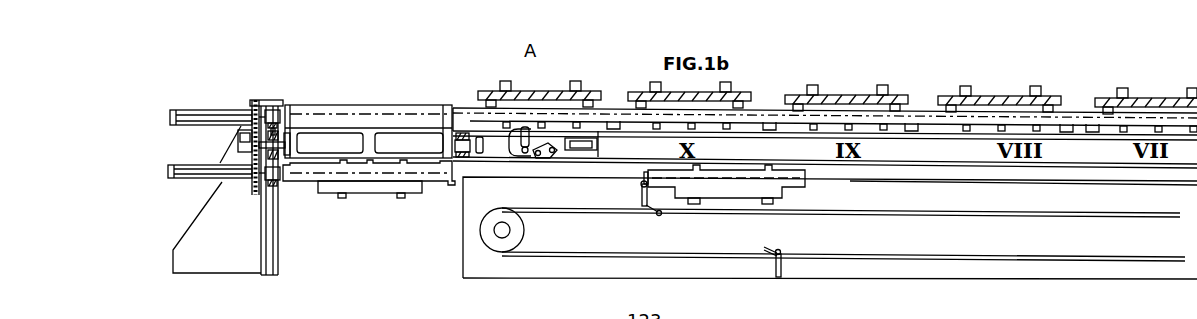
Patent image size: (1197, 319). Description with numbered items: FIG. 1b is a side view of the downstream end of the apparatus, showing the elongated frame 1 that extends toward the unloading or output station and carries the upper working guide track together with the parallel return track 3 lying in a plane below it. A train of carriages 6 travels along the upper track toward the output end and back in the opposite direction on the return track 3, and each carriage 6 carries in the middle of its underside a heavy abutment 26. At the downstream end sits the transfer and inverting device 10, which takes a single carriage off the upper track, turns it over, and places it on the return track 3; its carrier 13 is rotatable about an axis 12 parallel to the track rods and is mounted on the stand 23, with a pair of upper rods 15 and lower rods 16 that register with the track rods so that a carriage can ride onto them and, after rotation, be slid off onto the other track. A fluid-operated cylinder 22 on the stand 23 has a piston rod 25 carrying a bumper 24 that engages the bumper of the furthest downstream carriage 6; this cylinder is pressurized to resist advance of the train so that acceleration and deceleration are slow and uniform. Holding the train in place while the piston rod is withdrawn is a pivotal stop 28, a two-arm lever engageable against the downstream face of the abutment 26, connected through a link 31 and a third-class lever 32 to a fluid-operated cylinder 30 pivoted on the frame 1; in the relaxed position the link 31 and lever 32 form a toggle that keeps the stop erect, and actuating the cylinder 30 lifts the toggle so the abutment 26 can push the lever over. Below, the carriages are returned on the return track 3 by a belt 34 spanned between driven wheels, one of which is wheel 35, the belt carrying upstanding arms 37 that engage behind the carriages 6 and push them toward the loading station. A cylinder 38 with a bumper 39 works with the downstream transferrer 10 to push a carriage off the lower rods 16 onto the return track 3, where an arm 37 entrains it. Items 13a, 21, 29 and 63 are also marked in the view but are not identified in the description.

The elongated frame 1 is at (912, 152).
The return track 3 is at (565, 177).
The carriage 6 is at (910, 120).
The transfer and inverting device 10 is at (340, 132).
The axis 12 is at (457, 140).
The carrier 13 is at (392, 128).
The carriage guide block 13a is at (238, 145).
The upper rods 15 is at (318, 112).
The lower rods 16 is at (362, 178).
The pallet support bar 21 is at (1143, 99).
The fluid-operated cylinder 22 is at (197, 110).
The stand 23 is at (264, 258).
The bumper 24 is at (277, 111).
The piston rod 25 is at (256, 100).
The abutment 26 is at (532, 135).
The pivotal stop 28 is at (525, 140).
The rail lower edge 29 is at (833, 98).
The fluid-operated cylinder 30 is at (585, 151).
The link 31 is at (520, 158).
The third-class lever 32 is at (545, 159).
The belt 34 is at (1082, 213).
The driven wheel 35 is at (480, 232).
The upstanding arms 37 is at (642, 207).
The cylinder 38 is at (222, 172).
The bumper 39 is at (274, 183).
The pallet post 63 is at (878, 90).